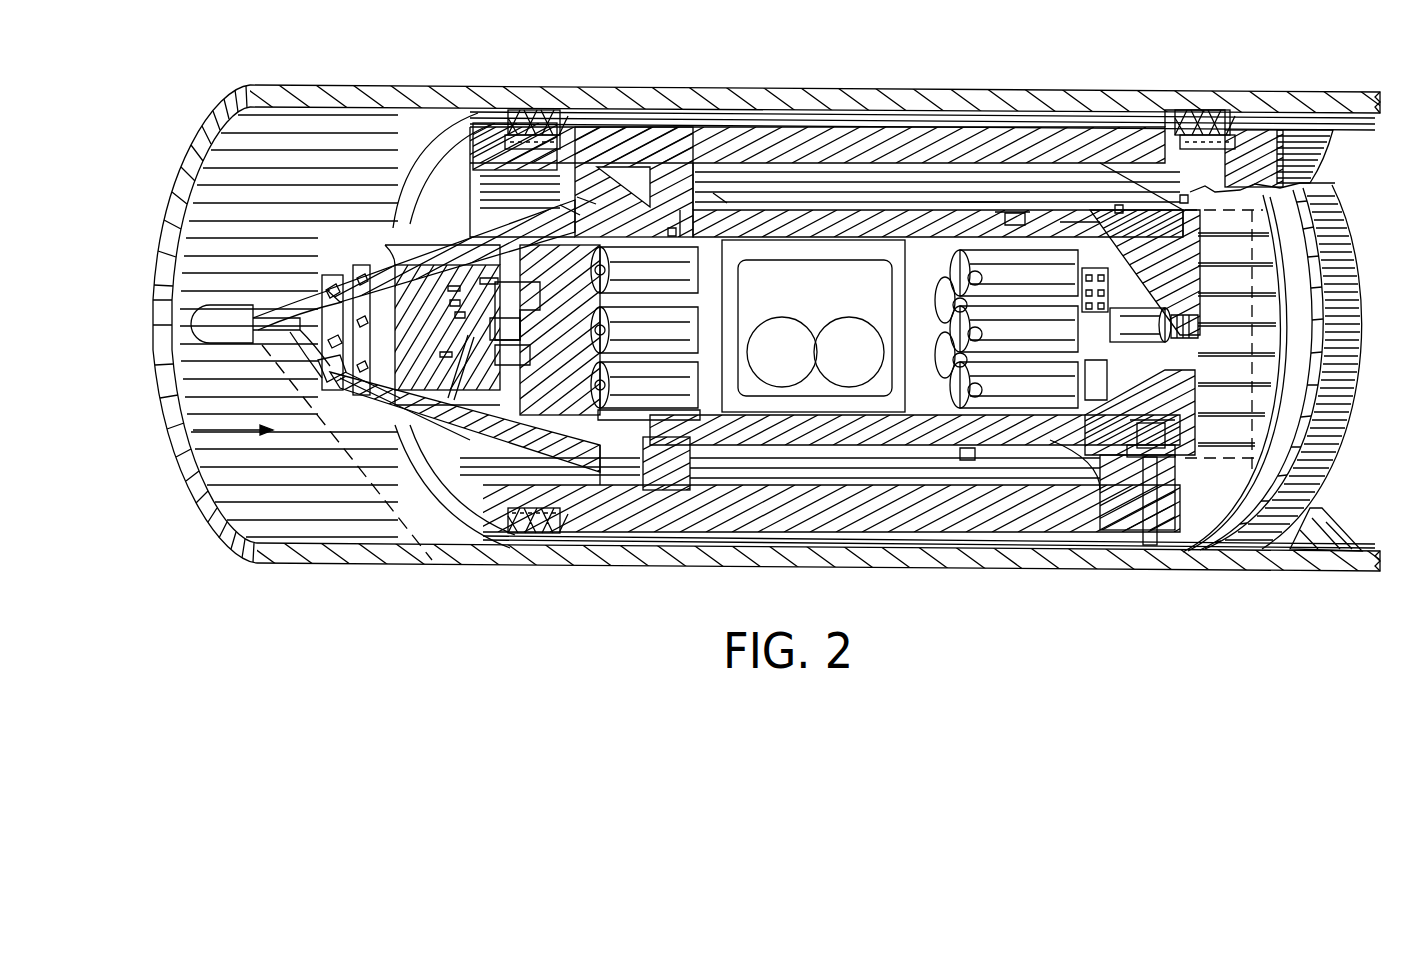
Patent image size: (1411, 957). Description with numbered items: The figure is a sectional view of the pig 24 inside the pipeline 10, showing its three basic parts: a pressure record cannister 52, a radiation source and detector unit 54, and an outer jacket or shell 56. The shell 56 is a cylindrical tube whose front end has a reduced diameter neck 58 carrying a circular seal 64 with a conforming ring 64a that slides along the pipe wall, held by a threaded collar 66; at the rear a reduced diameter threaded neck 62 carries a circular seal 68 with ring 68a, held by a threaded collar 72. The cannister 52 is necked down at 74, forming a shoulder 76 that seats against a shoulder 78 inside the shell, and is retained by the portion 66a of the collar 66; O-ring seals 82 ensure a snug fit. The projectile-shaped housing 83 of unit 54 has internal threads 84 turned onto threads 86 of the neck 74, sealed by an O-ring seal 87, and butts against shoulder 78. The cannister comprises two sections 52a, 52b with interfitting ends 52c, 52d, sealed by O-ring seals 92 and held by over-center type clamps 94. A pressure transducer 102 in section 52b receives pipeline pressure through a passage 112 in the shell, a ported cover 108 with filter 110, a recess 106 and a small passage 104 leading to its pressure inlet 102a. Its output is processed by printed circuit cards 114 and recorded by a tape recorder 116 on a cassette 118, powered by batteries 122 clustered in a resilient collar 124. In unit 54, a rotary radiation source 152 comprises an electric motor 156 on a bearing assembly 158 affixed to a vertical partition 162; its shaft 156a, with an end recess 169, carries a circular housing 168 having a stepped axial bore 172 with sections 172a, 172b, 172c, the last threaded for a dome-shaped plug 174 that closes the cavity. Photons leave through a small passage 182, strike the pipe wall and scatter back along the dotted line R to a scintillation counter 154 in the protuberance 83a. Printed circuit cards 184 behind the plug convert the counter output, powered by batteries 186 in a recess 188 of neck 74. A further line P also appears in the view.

The pipeline 10 is at (438, 88).
The pig 24 is at (366, 178).
The pressure record cannister 52 is at (812, 203).
The cannister section 52a is at (730, 187).
The cannister section 52b is at (1080, 208).
The interfitting end 52c is at (1007, 220).
The interfitting end 52d is at (960, 194).
The radiation source and detector unit 54 is at (360, 240).
The outer jacket or shell 56 is at (745, 150).
The reduced diameter neck 58 is at (1270, 130).
The reduced diameter threaded neck 62 is at (575, 125).
The circular seal 64 is at (1206, 118).
The conforming ring 64a is at (1160, 127).
The threaded collar 66 is at (1322, 212).
The overhanging portion 66a is at (1332, 172).
The circular seal 68 is at (541, 110).
The ring 68a is at (517, 127).
The threaded collar 72 is at (452, 148).
The cannister neck 74 is at (657, 200).
The shoulder 76 is at (687, 213).
The shoulder 78 is at (655, 467).
The O-ring seals 82 is at (671, 227).
The projectile-shaped housing 83 is at (300, 290).
The protuberance 83a is at (248, 347).
The internal threads 84 is at (574, 194).
The threads 86 is at (637, 225).
The O-ring seal 87 is at (560, 205).
The O-ring seals 92 is at (1017, 223).
The over-center type clamps 94 is at (1008, 456).
The pressure transducer 102 is at (1160, 345).
The pressure inlet 102a is at (1200, 330).
The small passage 104 is at (1165, 378).
The recess 106 is at (1137, 430).
The ported cover 108 is at (1124, 478).
The filter 110 is at (1165, 428).
The passage 112 is at (1146, 522).
The printed circuit cards 114 is at (1108, 297).
The tape recorder 116 is at (824, 287).
The cassette 118 is at (800, 312).
The batteries 122 is at (952, 290).
The resilient collar 124 is at (955, 395).
The rotary radiation source 152 is at (393, 413).
The scintillation counter 154 is at (254, 312).
The electric motor 156 is at (569, 330).
The motor shaft 156a is at (509, 339).
The bearing assembly 158 is at (517, 311).
The vertical partition 162 is at (485, 250).
The circular housing 168 is at (460, 456).
The recess 169 is at (435, 298).
The axial bore 172 is at (462, 306).
The small diameter bore section 172a is at (474, 287).
The larger diameter bore section 172b is at (465, 320).
The still larger diameter bore section 172c is at (425, 356).
The dome-shaped plug 174 is at (380, 254).
The small passage 182 is at (462, 360).
The printed circuit cards 184 is at (337, 385).
The batteries 186 is at (651, 327).
The recess 188 is at (700, 418).
The plane P is at (423, 527).
The dotted line R is at (335, 458).